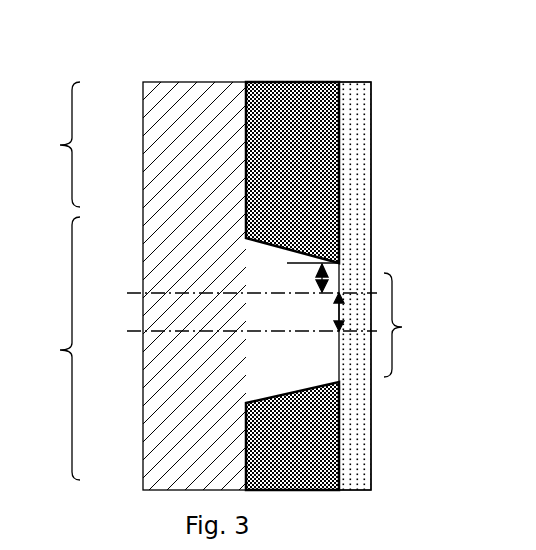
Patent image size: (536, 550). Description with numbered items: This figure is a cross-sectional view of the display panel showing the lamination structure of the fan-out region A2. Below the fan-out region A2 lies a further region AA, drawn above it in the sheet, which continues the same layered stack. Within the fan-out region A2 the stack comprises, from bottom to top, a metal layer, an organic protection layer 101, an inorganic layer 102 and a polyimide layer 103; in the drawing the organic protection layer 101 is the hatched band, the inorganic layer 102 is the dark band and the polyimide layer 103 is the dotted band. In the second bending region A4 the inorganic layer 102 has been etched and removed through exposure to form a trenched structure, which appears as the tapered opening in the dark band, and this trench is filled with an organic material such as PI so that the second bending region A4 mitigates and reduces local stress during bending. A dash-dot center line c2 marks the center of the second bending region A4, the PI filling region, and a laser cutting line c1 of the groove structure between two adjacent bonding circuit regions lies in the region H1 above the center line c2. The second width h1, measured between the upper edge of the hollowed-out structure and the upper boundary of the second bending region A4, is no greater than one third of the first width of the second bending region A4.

The organic protection layer 101 is at (185, 130).
The inorganic layer 102 is at (301, 81).
The polyimide layer 103 is at (353, 145).
The laser cutting line c1 is at (238, 293).
The center line c2 is at (238, 331).
The second width h1 is at (308, 278).
The region above the center line H1 is at (341, 291).
The region AA is at (50, 144).
The fan-out region A2 is at (47, 348).
The second bending region A4 is at (416, 325).